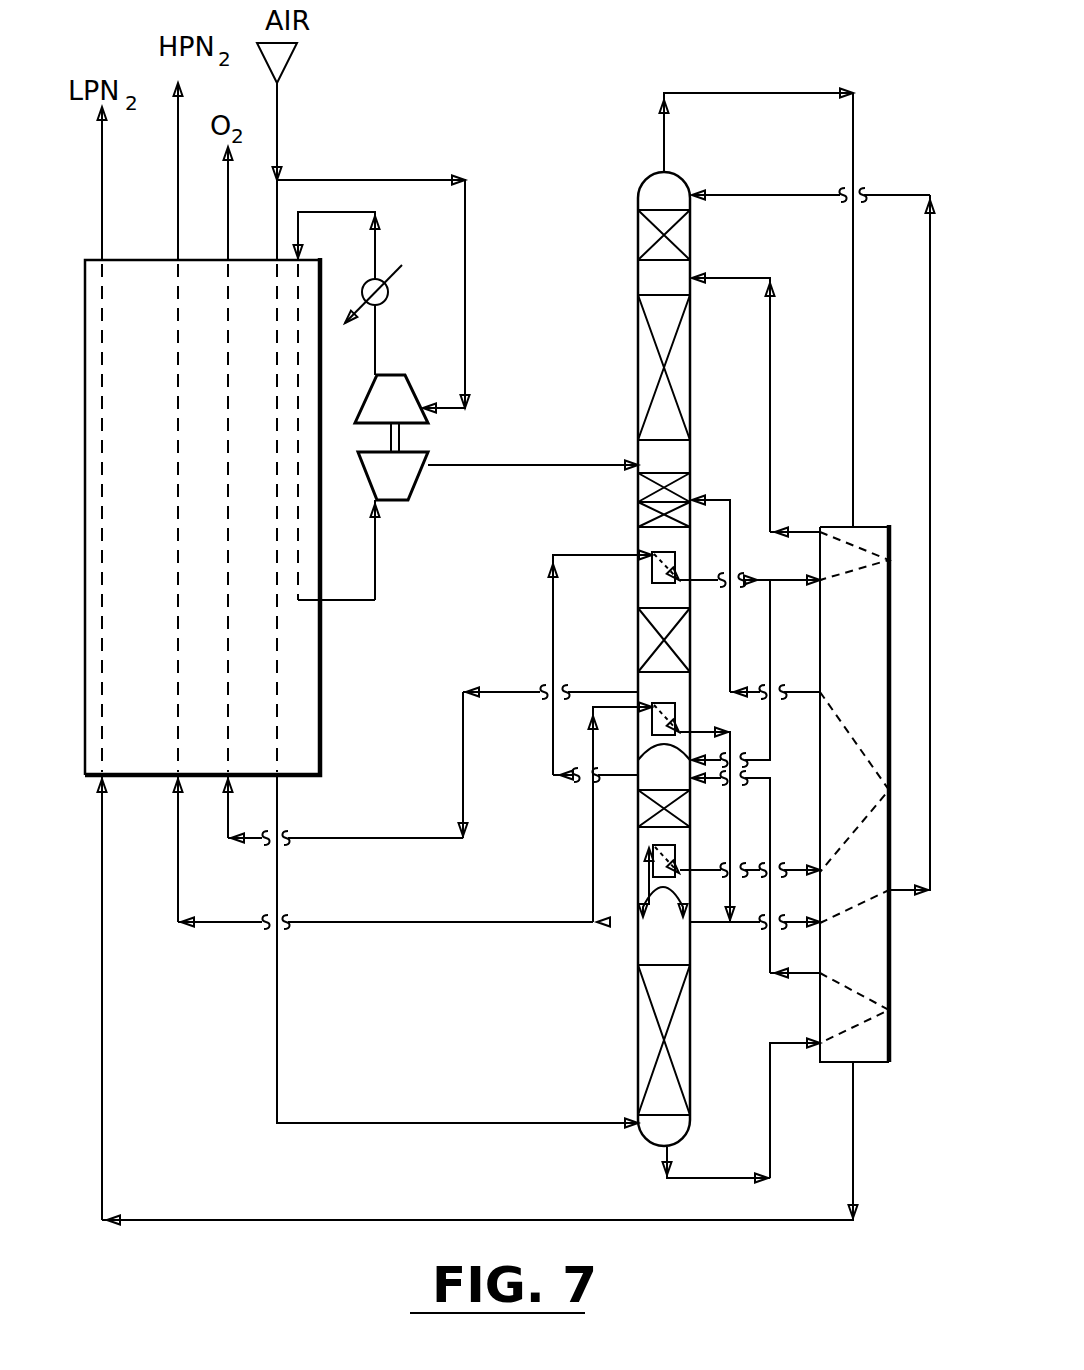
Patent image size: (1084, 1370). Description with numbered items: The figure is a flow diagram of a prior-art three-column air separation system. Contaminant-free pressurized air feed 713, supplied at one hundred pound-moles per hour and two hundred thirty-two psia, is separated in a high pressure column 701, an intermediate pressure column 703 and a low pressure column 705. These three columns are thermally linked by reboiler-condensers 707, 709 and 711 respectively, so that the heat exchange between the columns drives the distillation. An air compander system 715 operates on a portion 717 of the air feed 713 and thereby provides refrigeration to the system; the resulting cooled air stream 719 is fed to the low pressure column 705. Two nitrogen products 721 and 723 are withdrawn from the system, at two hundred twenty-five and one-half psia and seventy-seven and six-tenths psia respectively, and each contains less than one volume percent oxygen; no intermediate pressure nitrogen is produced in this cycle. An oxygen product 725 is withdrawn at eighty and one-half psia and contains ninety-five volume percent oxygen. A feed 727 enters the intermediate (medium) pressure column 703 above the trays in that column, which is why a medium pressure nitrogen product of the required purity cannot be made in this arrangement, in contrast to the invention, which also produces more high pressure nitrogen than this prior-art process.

The high pressure column 701 is at (638, 1038).
The intermediate pressure column 703 is at (638, 840).
The low pressure column 705 is at (638, 335).
The reboiler-condenser 707 is at (652, 868).
The reboiler-condenser 709 is at (660, 703).
The reboiler-condenser 711 is at (663, 552).
The pressurized air feed 713 is at (279, 114).
The air compander system 715 is at (430, 484).
The portion of air feed 717 is at (465, 240).
The cooled air stream 719 is at (562, 464).
The nitrogen product 721 is at (137, 221).
The nitrogen product 723 is at (177, 126).
The oxygen product 725 is at (229, 212).
The feed 727 is at (772, 957).